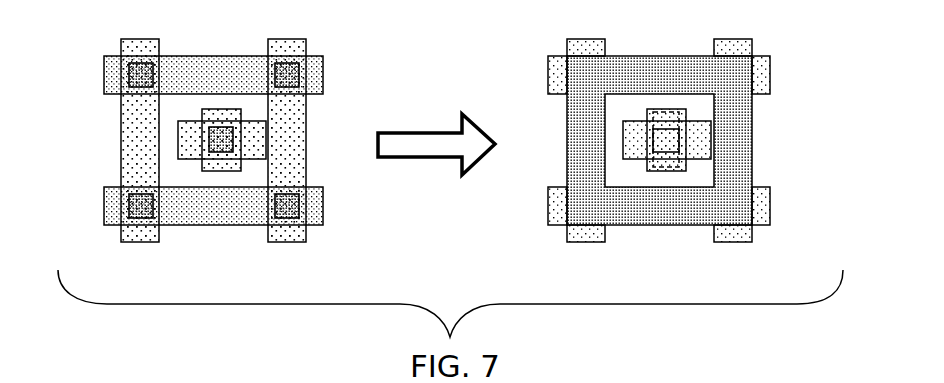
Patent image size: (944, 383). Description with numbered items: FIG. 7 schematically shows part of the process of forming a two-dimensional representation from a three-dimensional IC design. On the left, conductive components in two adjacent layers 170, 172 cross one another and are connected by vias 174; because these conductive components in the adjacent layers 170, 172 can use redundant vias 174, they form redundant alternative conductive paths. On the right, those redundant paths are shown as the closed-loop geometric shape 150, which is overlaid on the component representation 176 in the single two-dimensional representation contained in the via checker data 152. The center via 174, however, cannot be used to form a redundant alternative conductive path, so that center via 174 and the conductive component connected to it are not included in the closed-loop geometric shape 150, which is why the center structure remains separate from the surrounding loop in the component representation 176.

The closed-loop geometric shape 150 is at (658, 56).
The via checker data 152 is at (711, 124).
The adjacent layer 170 is at (104, 197).
The adjacent layer 172 is at (286, 40).
The redundant vias 174 is at (287, 205).
The component representation 176 is at (770, 205).